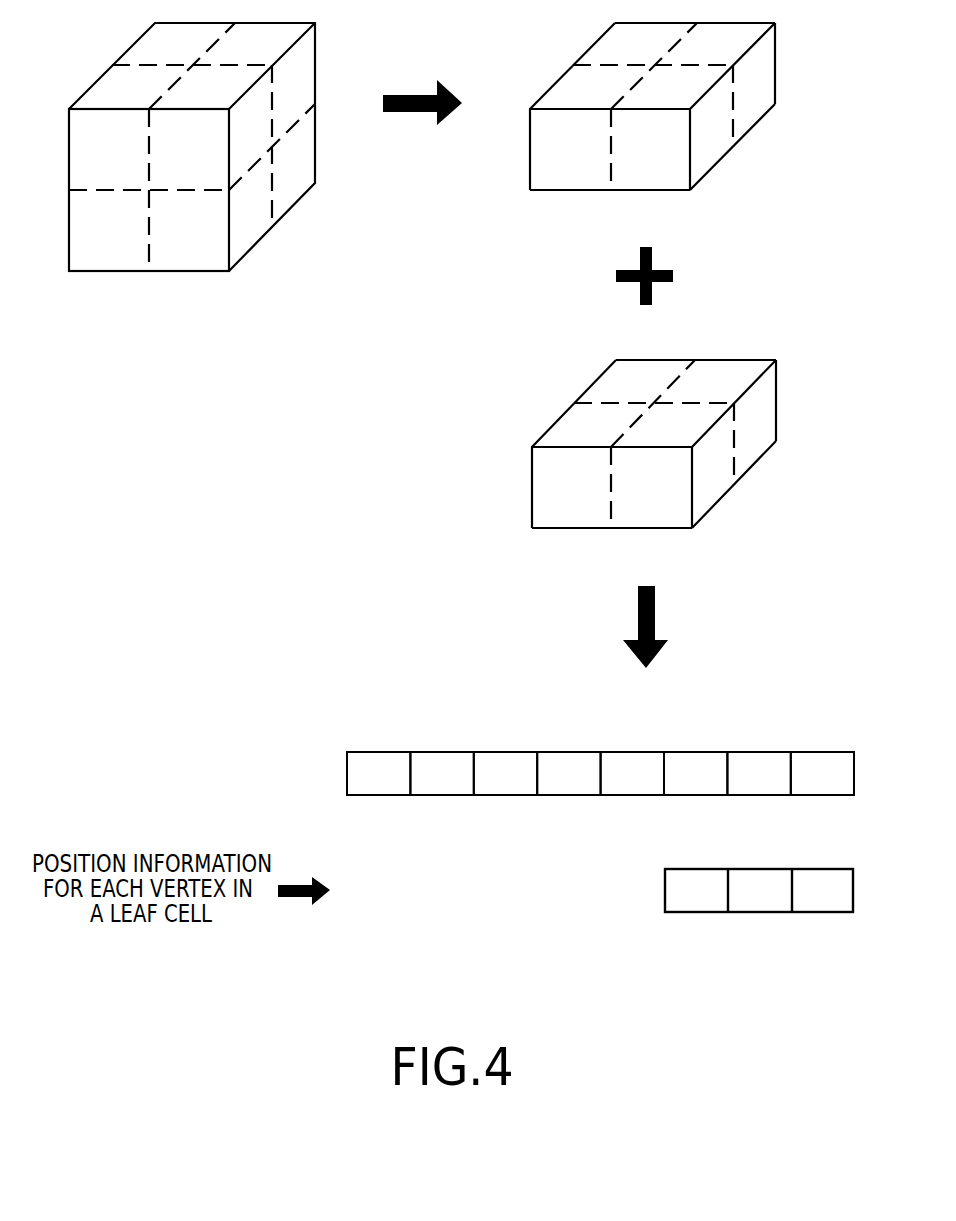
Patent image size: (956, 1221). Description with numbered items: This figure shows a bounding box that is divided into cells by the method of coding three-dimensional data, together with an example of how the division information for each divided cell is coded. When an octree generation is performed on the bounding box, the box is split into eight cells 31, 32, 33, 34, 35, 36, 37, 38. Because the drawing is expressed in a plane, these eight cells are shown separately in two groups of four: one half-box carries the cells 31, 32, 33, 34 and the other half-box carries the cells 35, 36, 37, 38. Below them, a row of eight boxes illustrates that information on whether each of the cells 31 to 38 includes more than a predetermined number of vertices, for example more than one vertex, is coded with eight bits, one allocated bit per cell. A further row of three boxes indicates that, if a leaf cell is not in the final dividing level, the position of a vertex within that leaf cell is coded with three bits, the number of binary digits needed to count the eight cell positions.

The cell 31 is at (600, 37).
The cell 32 is at (556, 83).
The cell 33 is at (677, 190).
The cell 34 is at (777, 58).
The cell 35 is at (601, 375).
The cell 36 is at (558, 421).
The cell 37 is at (679, 528).
The cell 38 is at (778, 400).